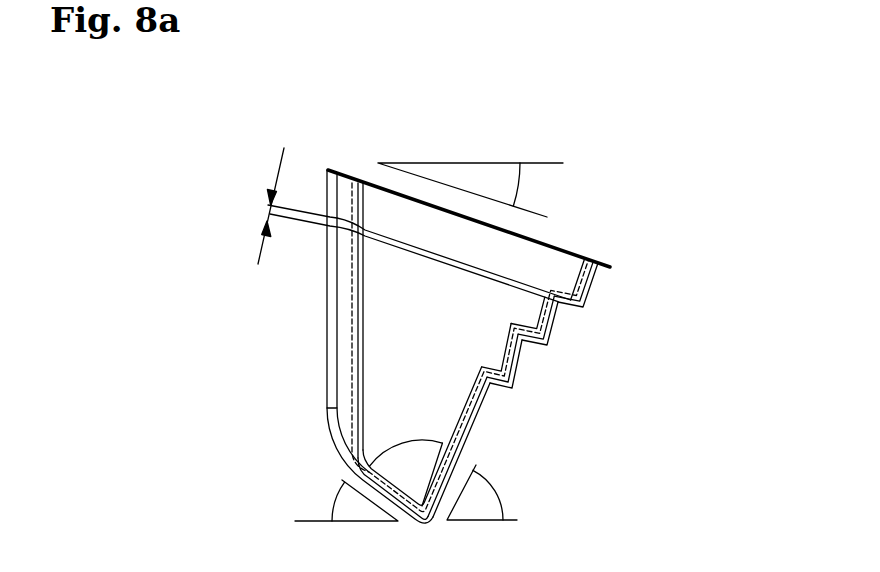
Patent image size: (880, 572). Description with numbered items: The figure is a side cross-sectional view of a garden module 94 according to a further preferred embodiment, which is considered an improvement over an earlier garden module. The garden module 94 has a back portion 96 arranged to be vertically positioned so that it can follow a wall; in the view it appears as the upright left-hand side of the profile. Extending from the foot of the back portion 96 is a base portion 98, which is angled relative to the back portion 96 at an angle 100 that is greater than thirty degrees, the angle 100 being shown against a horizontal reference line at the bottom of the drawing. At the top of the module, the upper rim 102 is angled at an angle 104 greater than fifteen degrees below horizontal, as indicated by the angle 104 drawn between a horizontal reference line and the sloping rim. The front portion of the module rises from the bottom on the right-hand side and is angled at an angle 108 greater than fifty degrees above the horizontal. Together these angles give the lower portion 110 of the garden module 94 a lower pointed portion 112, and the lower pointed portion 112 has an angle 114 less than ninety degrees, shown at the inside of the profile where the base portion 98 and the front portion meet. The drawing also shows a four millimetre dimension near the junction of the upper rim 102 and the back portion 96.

The garden module 94 is at (638, 338).
The back portion 96 is at (327, 355).
The base portion 98 is at (408, 523).
The angle 100 is at (295, 521).
The upper rim 102 is at (574, 254).
The angle 104 is at (472, 162).
The angle 108 is at (493, 521).
The lower portion 110 is at (560, 450).
The lower pointed portion 112 is at (556, 480).
The angle 114 is at (405, 438).